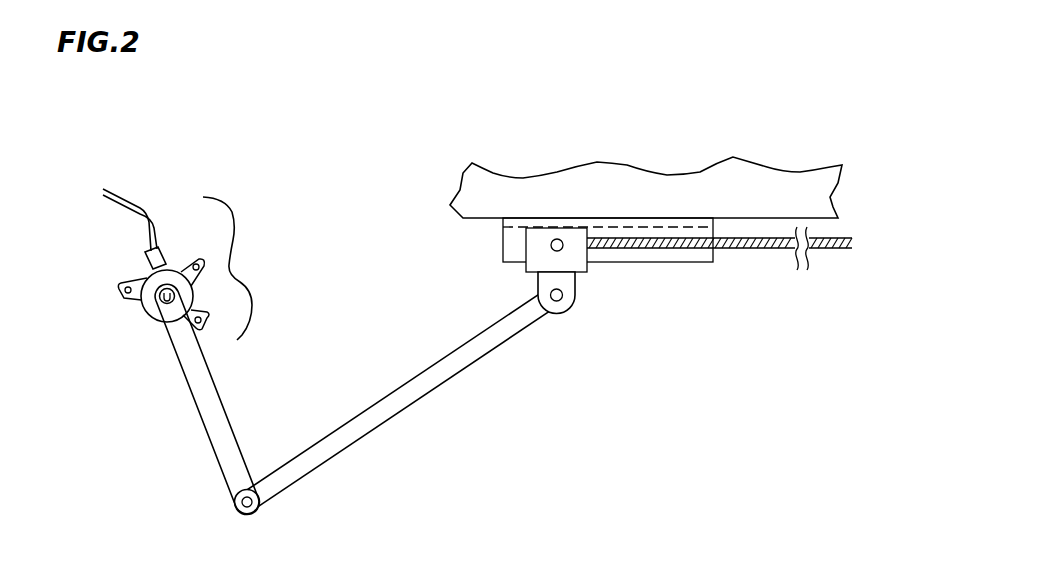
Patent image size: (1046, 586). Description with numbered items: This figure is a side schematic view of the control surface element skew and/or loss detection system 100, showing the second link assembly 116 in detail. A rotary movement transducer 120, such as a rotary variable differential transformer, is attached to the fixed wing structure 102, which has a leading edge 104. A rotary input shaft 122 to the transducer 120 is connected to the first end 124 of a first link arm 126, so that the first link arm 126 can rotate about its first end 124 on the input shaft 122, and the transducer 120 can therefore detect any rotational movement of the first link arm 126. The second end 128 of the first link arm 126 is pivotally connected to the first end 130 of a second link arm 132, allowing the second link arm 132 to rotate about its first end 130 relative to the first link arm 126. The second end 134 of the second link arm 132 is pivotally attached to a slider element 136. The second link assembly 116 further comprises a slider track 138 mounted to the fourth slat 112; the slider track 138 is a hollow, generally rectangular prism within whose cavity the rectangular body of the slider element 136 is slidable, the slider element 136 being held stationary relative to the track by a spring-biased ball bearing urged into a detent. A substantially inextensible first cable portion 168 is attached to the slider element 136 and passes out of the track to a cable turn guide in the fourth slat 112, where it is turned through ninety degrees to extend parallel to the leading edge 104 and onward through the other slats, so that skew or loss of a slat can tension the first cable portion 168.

The control surface element skew and/or loss detection system 100 is at (355, 138).
The fixed wing structure 102 is at (193, 187).
The leading edge 104 is at (236, 218).
The fourth slat 112 is at (650, 182).
The second link assembly 116 is at (637, 423).
The rotary movement transducer 120 is at (151, 309).
The rotary input shaft 122 is at (169, 294).
The first end of first link arm 124 is at (181, 298).
The first link arm 126 is at (203, 380).
The second end of first link arm 128 is at (233, 500).
The first end of second link arm 130 is at (263, 503).
The second link arm 132 is at (412, 395).
The second end of second link arm 134 is at (548, 315).
The slider element 136 is at (583, 273).
The slider track 138 is at (680, 253).
The first cable portion 168 is at (768, 247).